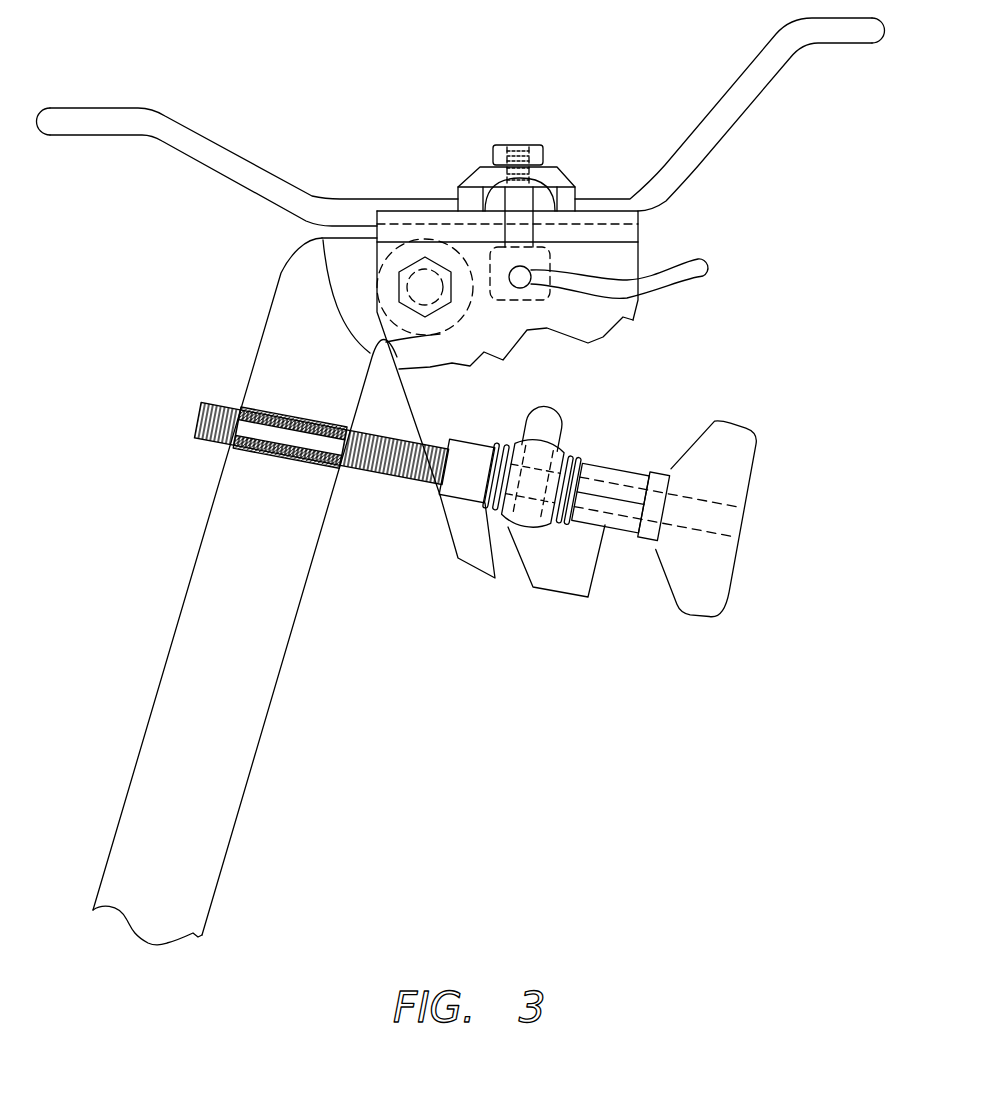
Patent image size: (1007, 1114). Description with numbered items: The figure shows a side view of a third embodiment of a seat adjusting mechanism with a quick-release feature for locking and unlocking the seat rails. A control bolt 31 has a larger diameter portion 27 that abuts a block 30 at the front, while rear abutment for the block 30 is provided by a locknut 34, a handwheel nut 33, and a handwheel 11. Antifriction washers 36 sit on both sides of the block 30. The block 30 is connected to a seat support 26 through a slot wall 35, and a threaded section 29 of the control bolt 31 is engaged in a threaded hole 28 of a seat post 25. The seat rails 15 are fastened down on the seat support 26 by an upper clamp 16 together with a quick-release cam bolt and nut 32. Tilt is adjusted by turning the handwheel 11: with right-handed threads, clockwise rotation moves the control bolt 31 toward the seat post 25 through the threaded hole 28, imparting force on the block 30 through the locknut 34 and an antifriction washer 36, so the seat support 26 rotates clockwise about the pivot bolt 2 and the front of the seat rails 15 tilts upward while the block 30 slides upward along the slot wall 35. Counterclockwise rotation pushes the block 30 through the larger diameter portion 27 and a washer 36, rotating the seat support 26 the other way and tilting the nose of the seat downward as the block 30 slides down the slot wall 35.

The pivot bolt 2 is at (423, 283).
The handwheel 11 is at (707, 576).
The seat rails 15 is at (723, 122).
The upper clamp 16 is at (478, 175).
The seat post 25 is at (255, 553).
The seat support 26 is at (615, 257).
The larger diameter portion 27 is at (463, 500).
The threaded hole 28 is at (306, 466).
The threaded section 29 is at (235, 405).
The block 30 is at (550, 440).
The control bolt 31 is at (698, 488).
The quick-release cam bolt and nut 32 is at (571, 275).
The handwheel nut 33 is at (622, 527).
The locknut 34 is at (605, 462).
The slot wall 35 is at (497, 587).
The antifriction washers 36 is at (490, 513).